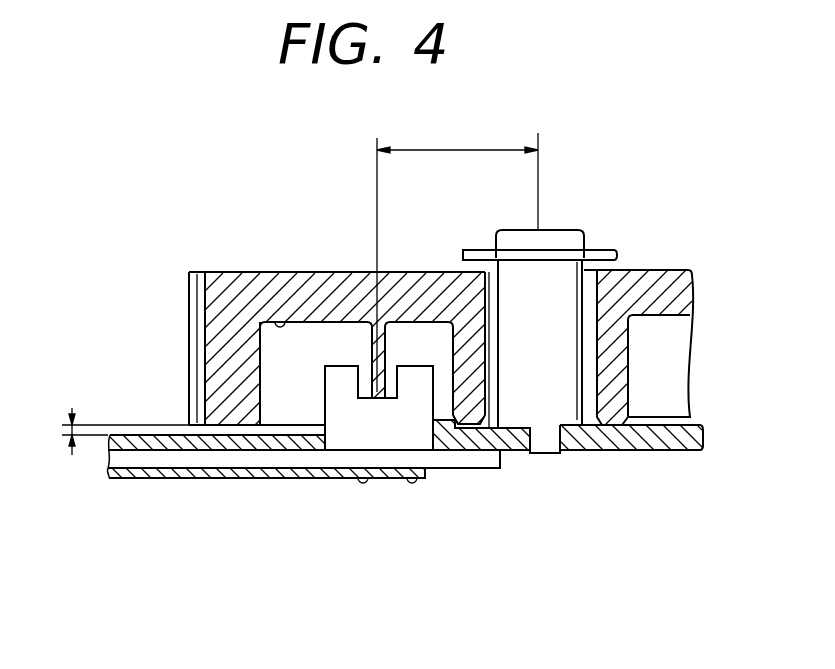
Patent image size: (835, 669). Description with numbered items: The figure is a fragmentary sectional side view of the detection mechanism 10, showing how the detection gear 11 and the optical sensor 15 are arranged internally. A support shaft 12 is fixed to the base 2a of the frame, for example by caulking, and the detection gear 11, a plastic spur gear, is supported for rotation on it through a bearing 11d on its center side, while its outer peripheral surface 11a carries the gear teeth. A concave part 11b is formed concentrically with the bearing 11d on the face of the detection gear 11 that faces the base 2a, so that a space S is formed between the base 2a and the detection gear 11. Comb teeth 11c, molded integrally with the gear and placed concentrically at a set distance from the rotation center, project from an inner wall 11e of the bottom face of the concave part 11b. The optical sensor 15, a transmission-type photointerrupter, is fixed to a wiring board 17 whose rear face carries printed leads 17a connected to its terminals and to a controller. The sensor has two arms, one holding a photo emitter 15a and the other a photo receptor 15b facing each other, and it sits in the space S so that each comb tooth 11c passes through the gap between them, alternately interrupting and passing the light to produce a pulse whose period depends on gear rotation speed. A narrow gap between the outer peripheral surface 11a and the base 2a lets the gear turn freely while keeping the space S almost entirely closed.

The detection mechanism 10 is at (122, 178).
The detection gear 11 is at (266, 270).
The outer peripheral surface 11a is at (233, 407).
The concave part 11b is at (290, 404).
The comb teeth 11c is at (370, 386).
The bearing 11d is at (472, 410).
The inner wall 11e is at (277, 324).
The space S is at (303, 360).
The support shaft 12 is at (550, 244).
The optical sensor 15 is at (380, 412).
The photo emitter 15a is at (343, 380).
The photo receptor 15b is at (417, 386).
The wiring board 17 is at (136, 463).
The leads 17a is at (183, 480).
The base 2a is at (617, 447).